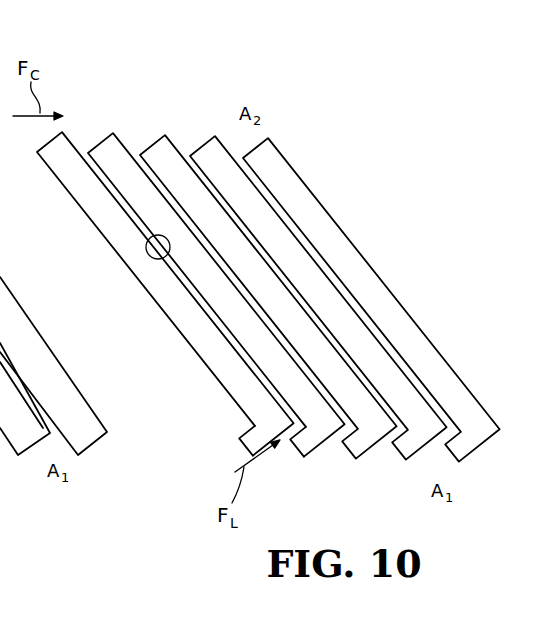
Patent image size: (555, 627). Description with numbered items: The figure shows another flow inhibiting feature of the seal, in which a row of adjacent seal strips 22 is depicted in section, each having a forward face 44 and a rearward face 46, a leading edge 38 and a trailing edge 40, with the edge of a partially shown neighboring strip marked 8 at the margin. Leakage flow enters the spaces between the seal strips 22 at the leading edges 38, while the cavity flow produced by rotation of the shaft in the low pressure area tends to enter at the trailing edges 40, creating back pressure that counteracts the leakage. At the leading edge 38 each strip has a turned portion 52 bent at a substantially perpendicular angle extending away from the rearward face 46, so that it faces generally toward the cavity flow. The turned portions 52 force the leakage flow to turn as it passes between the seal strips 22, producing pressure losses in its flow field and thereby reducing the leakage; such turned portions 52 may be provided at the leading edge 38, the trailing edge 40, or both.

The adjacent slat (partial) 8 is at (53, 395).
The seal strip 22 is at (148, 145).
The leading edge 38 is at (378, 448).
The trailing edge 40 is at (200, 147).
The forward face 44 is at (184, 338).
The rearward face 46 is at (146, 256).
The turned portion 52 is at (243, 448).